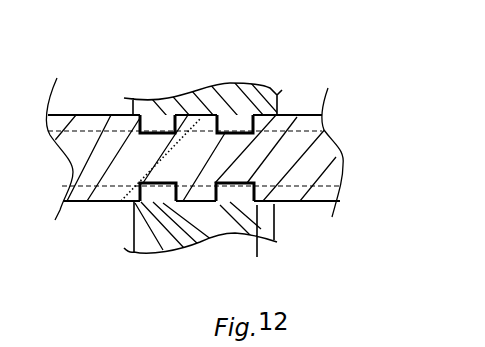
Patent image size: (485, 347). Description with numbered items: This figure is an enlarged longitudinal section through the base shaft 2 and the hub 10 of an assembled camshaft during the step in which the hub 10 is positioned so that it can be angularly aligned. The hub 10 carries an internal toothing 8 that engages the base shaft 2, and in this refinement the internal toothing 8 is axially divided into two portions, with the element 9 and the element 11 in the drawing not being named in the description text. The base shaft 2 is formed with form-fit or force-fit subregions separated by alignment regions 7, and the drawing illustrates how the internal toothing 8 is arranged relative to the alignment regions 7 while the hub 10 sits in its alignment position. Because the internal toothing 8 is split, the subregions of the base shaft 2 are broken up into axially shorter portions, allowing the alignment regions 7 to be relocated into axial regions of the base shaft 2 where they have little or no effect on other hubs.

The base shaft 2 is at (332, 168).
The alignment region 7 is at (183, 203).
The internal toothing 8 is at (236, 128).
The lower right recess 9 is at (232, 208).
The hub 10 is at (270, 100).
The lower left recess 11 is at (156, 197).